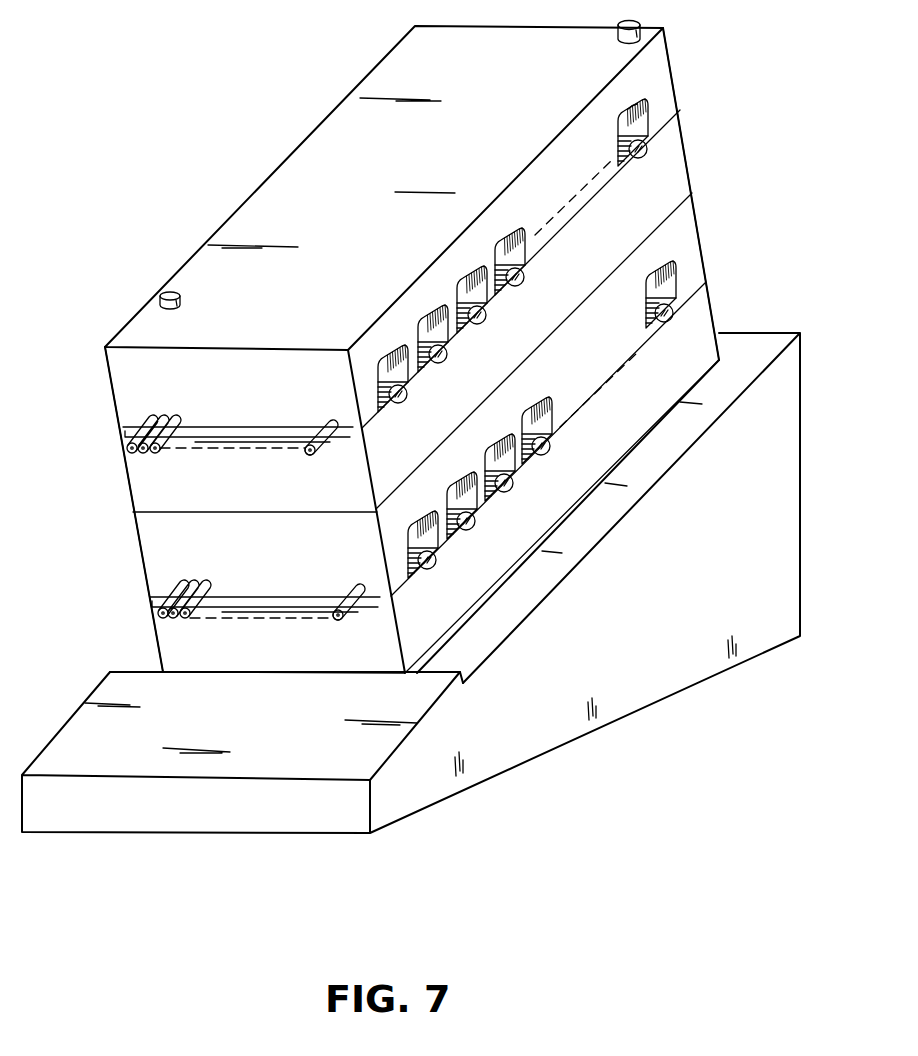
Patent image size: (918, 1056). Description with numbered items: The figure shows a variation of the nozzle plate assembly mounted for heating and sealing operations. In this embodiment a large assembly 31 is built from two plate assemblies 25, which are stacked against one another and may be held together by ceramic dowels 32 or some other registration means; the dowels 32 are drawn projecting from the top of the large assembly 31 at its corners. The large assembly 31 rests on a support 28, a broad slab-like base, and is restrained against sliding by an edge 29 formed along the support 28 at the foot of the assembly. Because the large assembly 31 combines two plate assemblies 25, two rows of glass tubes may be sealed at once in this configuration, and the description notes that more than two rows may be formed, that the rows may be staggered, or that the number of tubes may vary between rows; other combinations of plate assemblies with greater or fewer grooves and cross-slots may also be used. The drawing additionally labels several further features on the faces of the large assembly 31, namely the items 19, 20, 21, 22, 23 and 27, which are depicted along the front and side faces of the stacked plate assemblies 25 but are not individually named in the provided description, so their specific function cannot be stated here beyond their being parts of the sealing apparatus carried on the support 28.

The tray front panel 19 is at (120, 375).
The housing section 20 is at (138, 494).
The rod 21 is at (172, 420).
The cylinders 22 is at (142, 453).
The dispensing unit 23 is at (528, 272).
The plate assembly 25 is at (724, 241).
The knob 27 is at (440, 365).
The support 28 is at (630, 690).
The edge 29 is at (445, 670).
The large assembly 31 is at (166, 235).
The ceramic dowel 32 is at (181, 298).